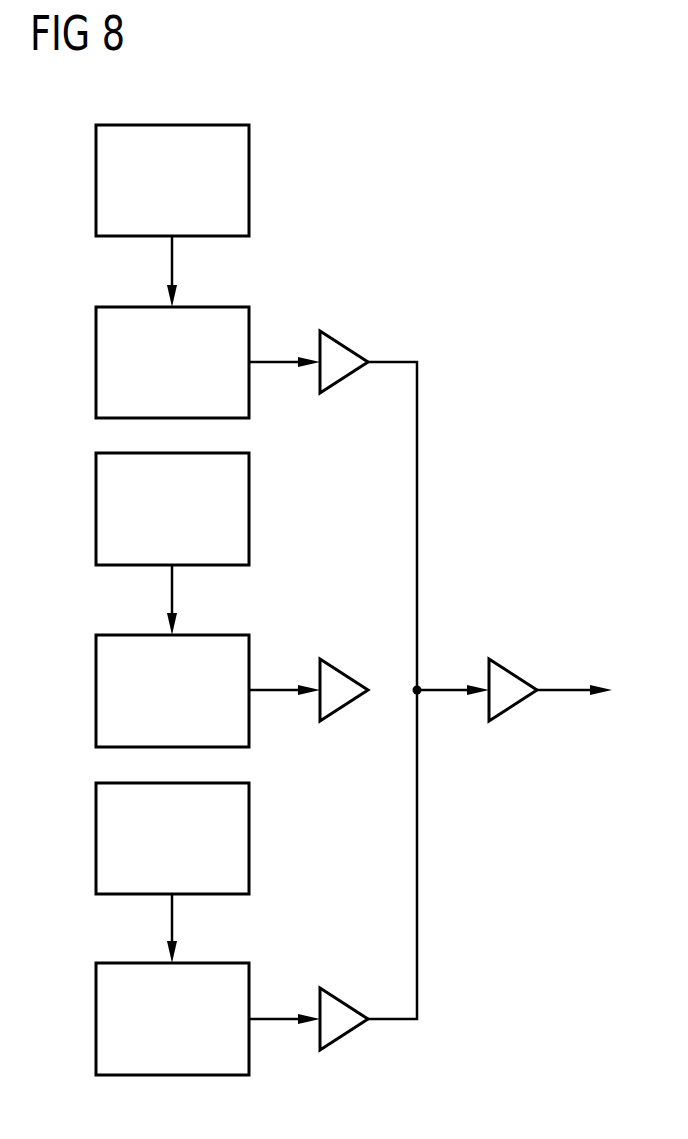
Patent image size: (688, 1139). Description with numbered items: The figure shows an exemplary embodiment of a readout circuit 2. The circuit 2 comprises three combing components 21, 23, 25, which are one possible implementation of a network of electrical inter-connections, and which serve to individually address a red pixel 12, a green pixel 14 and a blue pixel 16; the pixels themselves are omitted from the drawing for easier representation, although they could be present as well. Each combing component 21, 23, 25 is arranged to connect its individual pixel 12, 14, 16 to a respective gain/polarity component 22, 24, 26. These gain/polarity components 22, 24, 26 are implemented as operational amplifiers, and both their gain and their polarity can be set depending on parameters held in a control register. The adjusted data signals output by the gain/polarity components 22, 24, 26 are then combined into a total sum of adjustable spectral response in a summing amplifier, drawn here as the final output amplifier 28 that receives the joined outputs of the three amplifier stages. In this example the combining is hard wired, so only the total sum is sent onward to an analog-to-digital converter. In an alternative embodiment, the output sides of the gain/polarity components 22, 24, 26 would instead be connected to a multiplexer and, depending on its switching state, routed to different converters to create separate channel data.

The circuit 2 is at (493, 276).
The combing component 21 is at (96, 182).
The red pixel 12 is at (96, 364).
The gain/polarity component 22 is at (344, 343).
The combing component 23 is at (96, 510).
The green pixel 14 is at (96, 692).
The gain/polarity component 24 is at (344, 672).
The combing component 25 is at (96, 840).
The blue pixel 16 is at (96, 1020).
The gain/polarity component 26 is at (344, 1001).
The output amplifier 28 is at (513, 672).